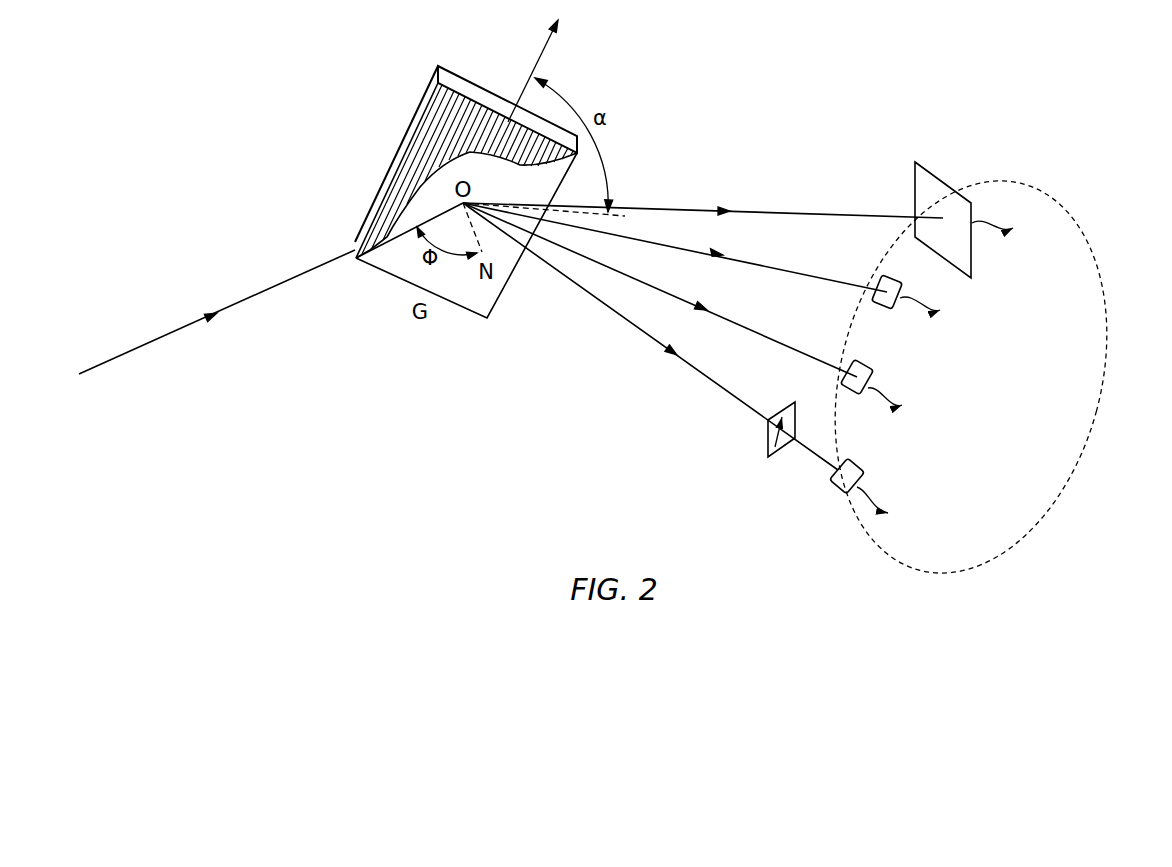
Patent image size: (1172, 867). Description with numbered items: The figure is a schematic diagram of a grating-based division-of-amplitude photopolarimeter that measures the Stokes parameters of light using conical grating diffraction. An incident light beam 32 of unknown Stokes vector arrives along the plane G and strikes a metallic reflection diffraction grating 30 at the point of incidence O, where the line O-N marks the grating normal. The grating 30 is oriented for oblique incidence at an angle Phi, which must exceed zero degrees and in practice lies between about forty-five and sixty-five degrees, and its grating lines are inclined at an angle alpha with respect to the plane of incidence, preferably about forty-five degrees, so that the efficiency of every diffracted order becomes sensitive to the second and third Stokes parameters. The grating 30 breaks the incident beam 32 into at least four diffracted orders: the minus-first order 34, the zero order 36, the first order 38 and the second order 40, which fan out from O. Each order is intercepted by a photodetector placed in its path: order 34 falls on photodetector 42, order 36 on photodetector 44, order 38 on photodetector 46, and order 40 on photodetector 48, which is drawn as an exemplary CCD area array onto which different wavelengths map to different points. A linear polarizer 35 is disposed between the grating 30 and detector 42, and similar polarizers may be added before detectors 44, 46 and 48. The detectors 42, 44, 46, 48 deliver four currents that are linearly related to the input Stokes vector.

The metallic reflection diffraction grating 30 is at (421, 101).
The incident light beam 32 is at (298, 275).
The diffracted order O-1 34 is at (723, 387).
The linear polarizer 35 is at (773, 460).
The diffracted order O0 36 is at (748, 325).
The diffracted order O1 38 is at (772, 267).
The diffracted order O2 40 is at (808, 215).
The photodetector 42 is at (862, 472).
The photodetector 44 is at (872, 372).
The photodetector 46 is at (887, 273).
The photodetector 48 is at (935, 173).